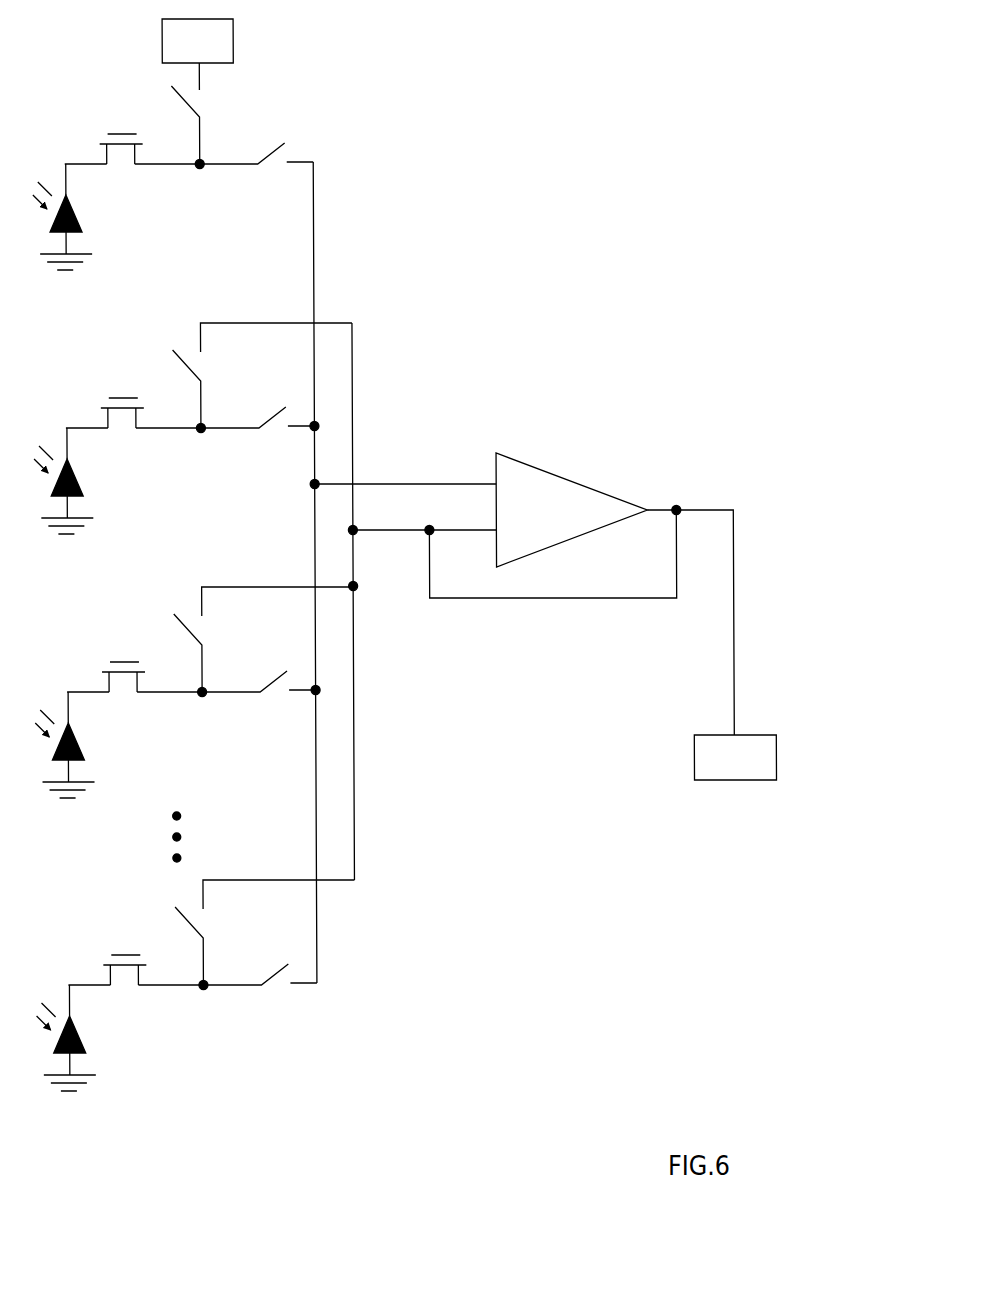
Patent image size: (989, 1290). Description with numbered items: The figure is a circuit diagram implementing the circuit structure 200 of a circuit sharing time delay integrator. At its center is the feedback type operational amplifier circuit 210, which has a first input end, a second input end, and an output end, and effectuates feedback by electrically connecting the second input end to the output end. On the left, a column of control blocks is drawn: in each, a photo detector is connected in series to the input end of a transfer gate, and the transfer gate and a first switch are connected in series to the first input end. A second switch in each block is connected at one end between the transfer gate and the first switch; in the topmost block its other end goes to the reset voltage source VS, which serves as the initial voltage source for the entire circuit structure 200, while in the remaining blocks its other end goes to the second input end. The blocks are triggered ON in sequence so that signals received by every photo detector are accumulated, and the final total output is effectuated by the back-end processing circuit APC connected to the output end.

The circuit structure 200 is at (702, 28).
The feedback type operational amplifier circuit 210 is at (572, 510).
The reset voltage source VS is at (197, 41).
The back-end processing circuit APC is at (735, 757).